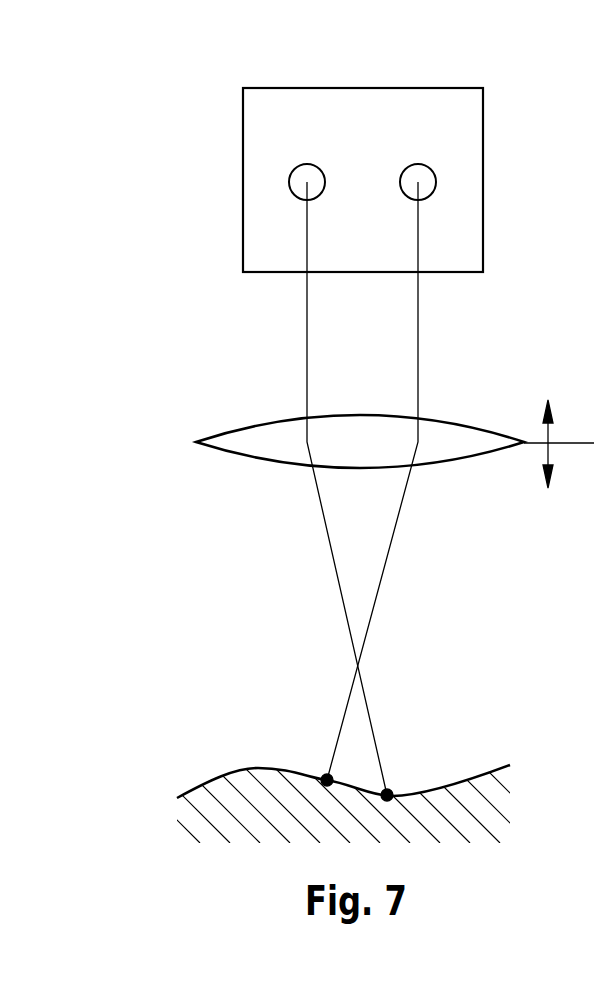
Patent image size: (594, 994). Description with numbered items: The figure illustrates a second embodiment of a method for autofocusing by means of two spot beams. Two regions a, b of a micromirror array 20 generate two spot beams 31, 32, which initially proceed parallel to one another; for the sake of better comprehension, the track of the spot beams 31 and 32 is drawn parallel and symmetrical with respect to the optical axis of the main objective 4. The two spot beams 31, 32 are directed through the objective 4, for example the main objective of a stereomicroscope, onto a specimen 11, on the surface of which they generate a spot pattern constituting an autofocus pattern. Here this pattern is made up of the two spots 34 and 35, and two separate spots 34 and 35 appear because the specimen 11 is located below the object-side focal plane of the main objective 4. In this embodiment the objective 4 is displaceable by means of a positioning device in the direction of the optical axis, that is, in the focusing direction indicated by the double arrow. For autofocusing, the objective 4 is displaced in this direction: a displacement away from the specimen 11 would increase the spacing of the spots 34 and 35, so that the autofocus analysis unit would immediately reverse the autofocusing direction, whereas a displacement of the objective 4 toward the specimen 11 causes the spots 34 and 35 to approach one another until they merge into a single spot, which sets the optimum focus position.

The micromirror array 20 is at (366, 123).
The region of the micromirror array a is at (289, 181).
The region of the micromirror array b is at (436, 181).
The spot beam 31 is at (305, 340).
The spot beam 32 is at (420, 340).
The main objective 4 is at (253, 443).
The specimen 11 is at (206, 770).
The spot 34 is at (320, 778).
The spot 35 is at (394, 793).